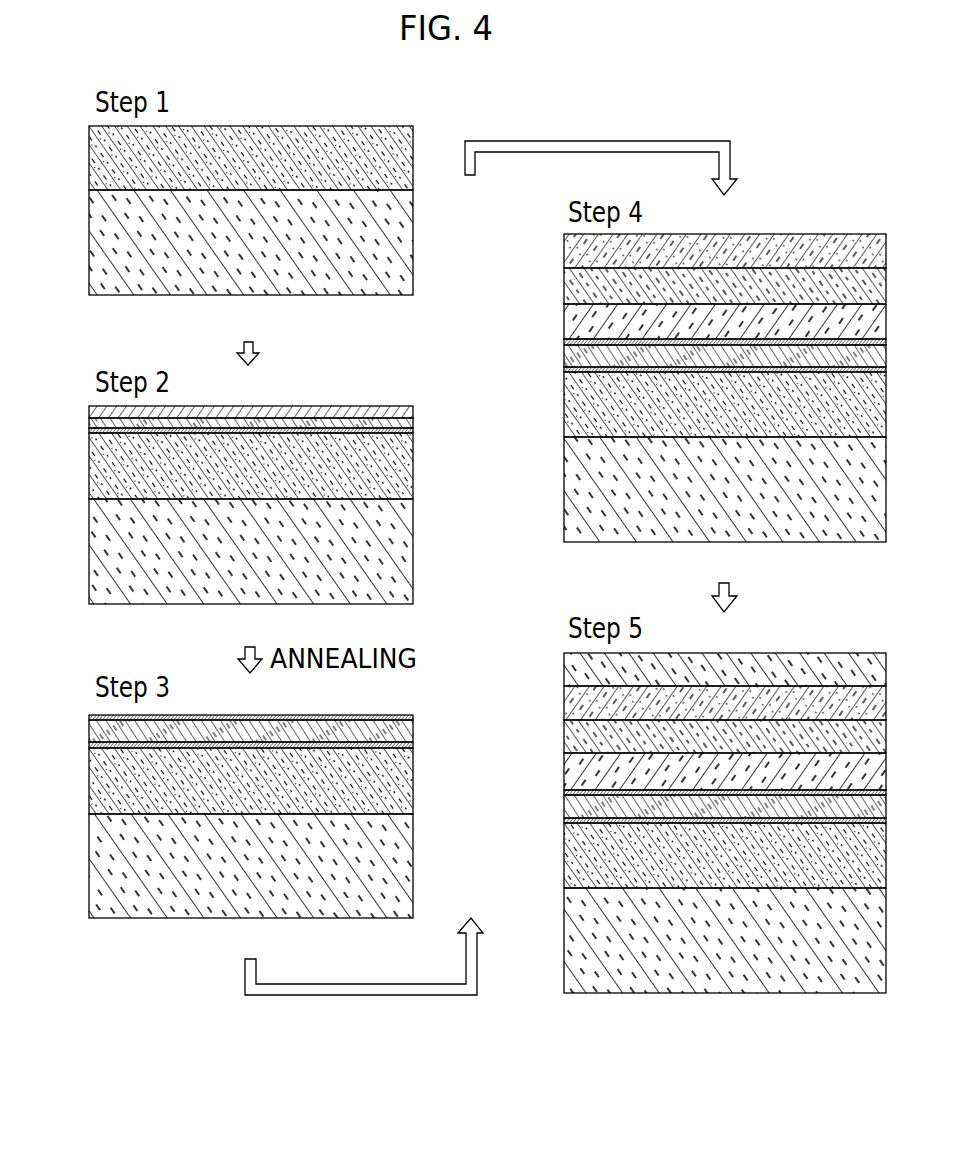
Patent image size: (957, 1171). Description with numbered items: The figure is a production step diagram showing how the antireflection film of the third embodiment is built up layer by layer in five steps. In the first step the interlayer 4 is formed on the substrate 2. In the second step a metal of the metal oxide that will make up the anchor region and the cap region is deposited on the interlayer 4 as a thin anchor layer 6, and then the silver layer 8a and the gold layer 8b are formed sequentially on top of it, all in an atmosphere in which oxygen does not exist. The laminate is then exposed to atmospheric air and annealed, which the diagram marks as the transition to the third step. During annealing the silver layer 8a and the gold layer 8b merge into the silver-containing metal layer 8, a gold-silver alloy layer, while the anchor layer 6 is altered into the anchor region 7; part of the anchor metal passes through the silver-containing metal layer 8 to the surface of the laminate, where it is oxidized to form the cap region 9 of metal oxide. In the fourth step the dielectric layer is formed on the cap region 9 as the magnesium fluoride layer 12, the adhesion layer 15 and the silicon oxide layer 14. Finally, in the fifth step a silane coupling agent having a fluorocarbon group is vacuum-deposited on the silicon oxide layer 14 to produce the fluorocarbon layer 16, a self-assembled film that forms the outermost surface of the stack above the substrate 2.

The substrate 2 is at (565, 943).
The interlayer 4 is at (90, 158).
The anchor layer 6 is at (90, 432).
The anchor region 7 is at (92, 747).
The silver-containing metal layer 8 is at (90, 725).
The silver layer 8a is at (90, 423).
The gold layer 8b is at (90, 408).
The cap region 9 is at (92, 717).
The magnesium fluoride layer 12 is at (565, 318).
The silicon oxide layer 14 is at (565, 250).
The adhesion layer 15 is at (565, 283).
The fluorocarbon layer 16 is at (565, 670).